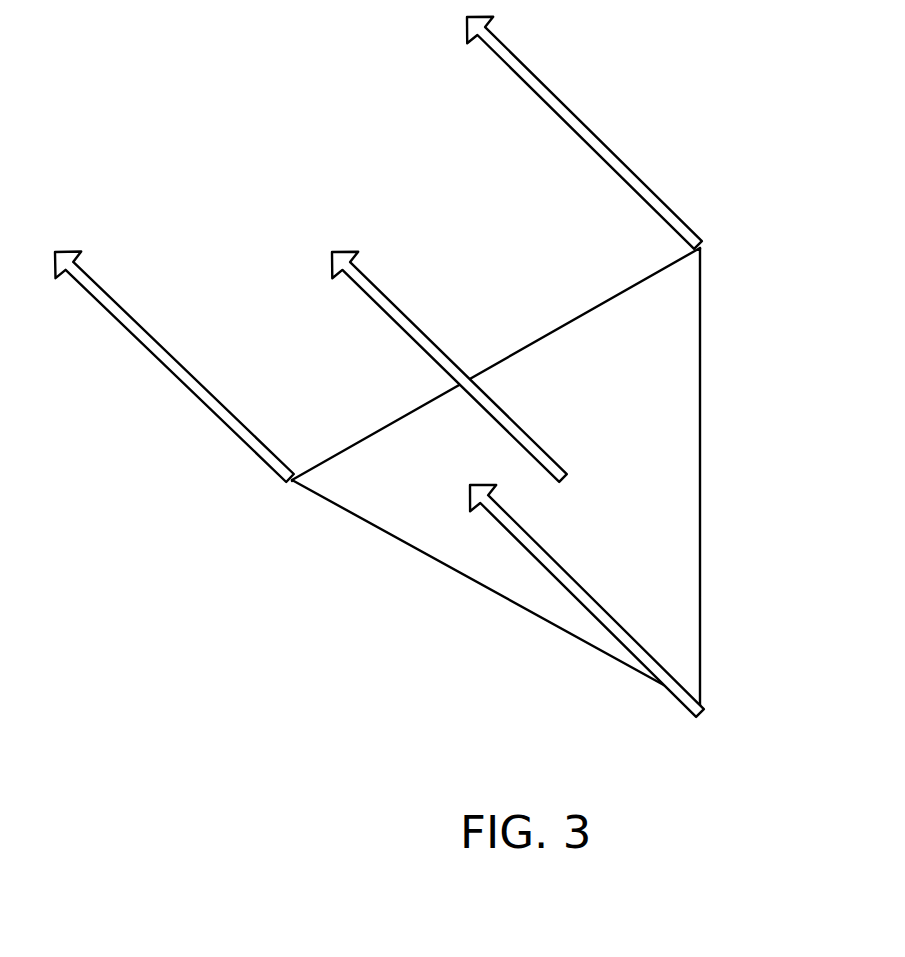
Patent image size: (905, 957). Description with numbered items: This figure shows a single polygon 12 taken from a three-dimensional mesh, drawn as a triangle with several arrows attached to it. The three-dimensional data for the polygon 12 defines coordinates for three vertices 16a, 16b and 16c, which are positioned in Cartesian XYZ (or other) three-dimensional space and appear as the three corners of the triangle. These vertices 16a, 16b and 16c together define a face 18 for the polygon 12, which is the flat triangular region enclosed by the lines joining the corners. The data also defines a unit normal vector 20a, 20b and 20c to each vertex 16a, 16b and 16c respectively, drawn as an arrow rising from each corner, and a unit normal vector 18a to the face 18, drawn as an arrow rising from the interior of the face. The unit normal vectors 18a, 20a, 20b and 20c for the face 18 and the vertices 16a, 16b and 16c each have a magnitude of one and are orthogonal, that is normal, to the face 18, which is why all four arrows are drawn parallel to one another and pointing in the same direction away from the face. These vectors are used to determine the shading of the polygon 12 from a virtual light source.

The polygon 12 is at (643, 66).
The vertex 16a is at (703, 250).
The vertex 16b is at (703, 703).
The vertex 16c is at (288, 483).
The face 18 is at (638, 393).
The unit normal vector to face 18a is at (417, 323).
The unit normal vector to vertex 20a is at (527, 70).
The unit normal vector to vertex 20b is at (592, 614).
The unit normal vector to vertex 20c is at (197, 400).